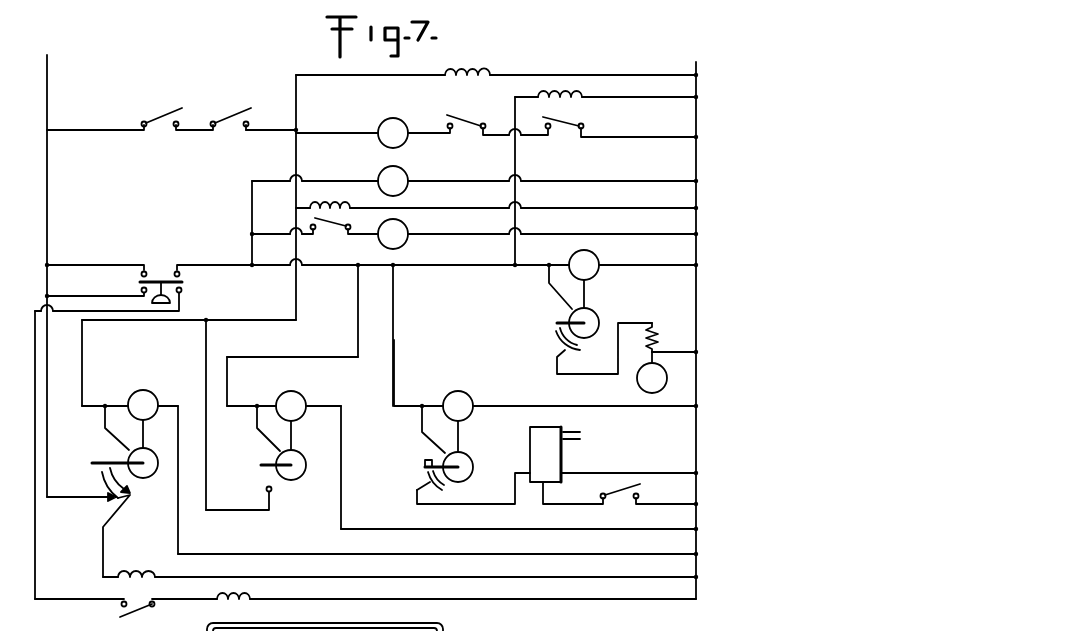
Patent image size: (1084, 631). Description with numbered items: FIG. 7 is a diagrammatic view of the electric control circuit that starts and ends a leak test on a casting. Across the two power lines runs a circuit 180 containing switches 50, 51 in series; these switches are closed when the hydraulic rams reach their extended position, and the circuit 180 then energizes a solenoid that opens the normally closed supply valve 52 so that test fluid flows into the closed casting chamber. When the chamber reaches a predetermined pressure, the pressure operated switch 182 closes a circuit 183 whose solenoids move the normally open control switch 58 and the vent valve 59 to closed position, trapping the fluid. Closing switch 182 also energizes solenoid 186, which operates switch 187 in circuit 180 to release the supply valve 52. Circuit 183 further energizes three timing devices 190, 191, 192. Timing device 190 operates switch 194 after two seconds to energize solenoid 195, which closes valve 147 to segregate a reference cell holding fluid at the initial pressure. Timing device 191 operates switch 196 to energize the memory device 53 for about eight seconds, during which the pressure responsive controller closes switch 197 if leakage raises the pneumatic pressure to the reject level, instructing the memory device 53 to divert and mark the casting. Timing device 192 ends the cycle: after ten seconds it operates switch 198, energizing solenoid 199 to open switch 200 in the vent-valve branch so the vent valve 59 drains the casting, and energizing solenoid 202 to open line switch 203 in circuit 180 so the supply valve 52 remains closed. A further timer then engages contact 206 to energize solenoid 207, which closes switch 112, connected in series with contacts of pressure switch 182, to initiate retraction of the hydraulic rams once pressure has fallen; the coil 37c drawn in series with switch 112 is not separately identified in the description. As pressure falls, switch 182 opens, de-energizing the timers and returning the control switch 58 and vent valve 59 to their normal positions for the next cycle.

The switch 50 is at (152, 116).
The switch 51 is at (225, 116).
The supply valve 52 is at (393, 117).
The memory device 53 is at (566, 457).
The control switch 58 is at (384, 163).
The vent valve 59 is at (411, 230).
The switch 112 is at (130, 610).
The valve 147 is at (640, 384).
The circuit 180 is at (258, 138).
The pressure operated switch 182 is at (160, 262).
The circuit 183 is at (252, 198).
The solenoid 186 is at (581, 104).
The switch 187 is at (565, 130).
The timing device 190 is at (585, 300).
The timing device 191 is at (460, 440).
The timing device 192 is at (293, 441).
The switch 194 is at (556, 323).
The solenoid 195 is at (657, 330).
The switch 196 is at (421, 470).
The switch 197 is at (618, 502).
The switch 198 is at (266, 488).
The solenoid 199 is at (337, 204).
The switch 200 is at (326, 230).
The solenoid 202 is at (466, 67).
The line switch 203 is at (469, 110).
The contact 206 is at (116, 502).
The solenoid 207 is at (138, 570).
The solenoid coil 37c is at (256, 595).